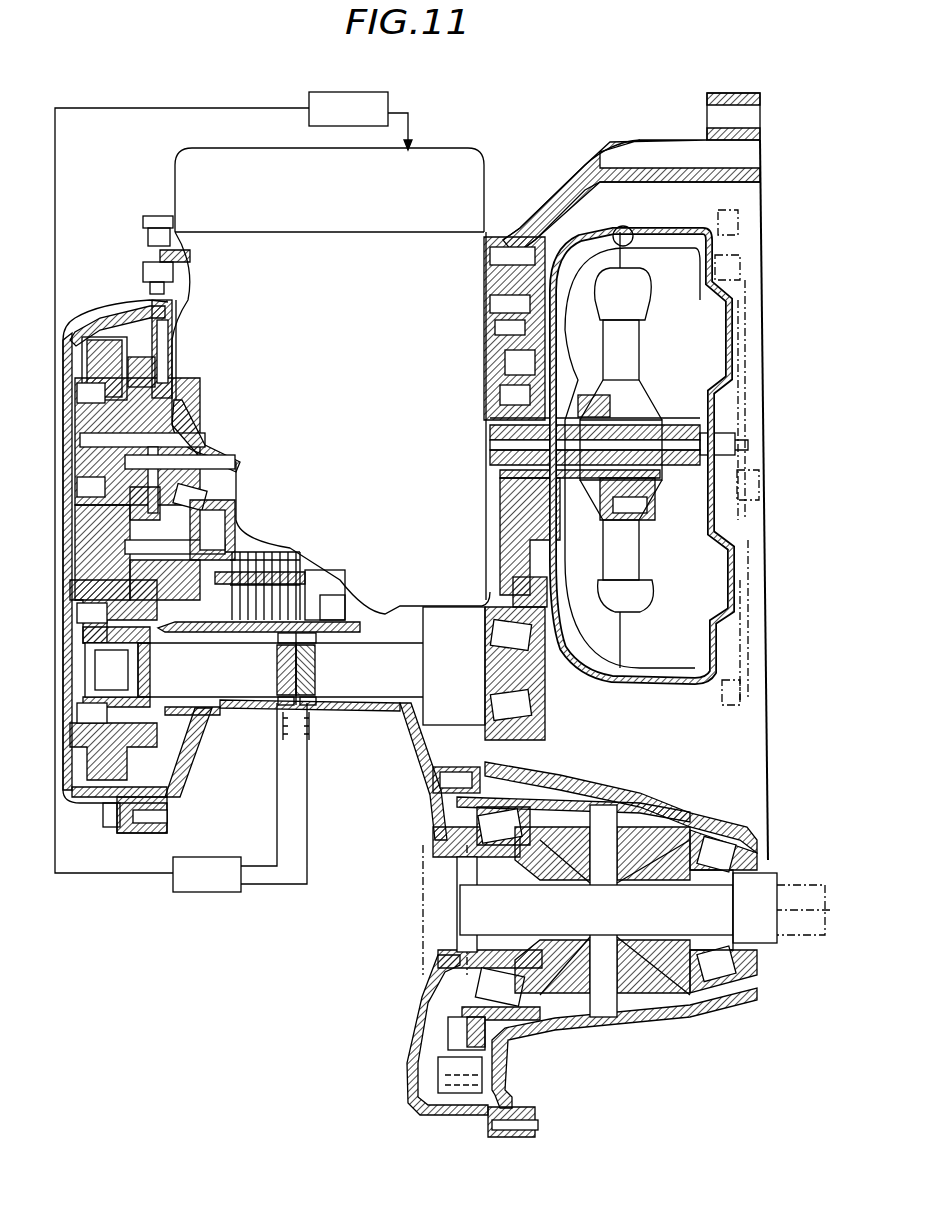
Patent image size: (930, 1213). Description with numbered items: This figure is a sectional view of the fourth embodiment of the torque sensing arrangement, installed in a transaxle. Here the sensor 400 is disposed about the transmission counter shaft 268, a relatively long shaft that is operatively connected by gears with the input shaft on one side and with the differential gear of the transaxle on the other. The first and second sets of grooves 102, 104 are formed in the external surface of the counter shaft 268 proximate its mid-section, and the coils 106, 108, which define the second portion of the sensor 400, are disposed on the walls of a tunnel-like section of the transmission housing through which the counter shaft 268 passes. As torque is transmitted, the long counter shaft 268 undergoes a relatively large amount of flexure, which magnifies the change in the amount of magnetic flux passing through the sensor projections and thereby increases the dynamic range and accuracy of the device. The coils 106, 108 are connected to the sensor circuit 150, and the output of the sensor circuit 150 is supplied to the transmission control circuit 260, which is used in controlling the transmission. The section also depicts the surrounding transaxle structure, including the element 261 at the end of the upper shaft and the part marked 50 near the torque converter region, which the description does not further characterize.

The transmission control circuit 260 is at (358, 103).
The sensor circuit 150 is at (207, 893).
The first set of grooves 102 is at (275, 661).
The second set of grooves 104 is at (316, 661).
The coil 106 is at (287, 705).
The coil 108 is at (318, 703).
The transmission counter shaft 268 is at (227, 683).
The sensor 400 is at (340, 685).
The shaft pin 261 is at (732, 460).
The bearing 50 is at (577, 392).